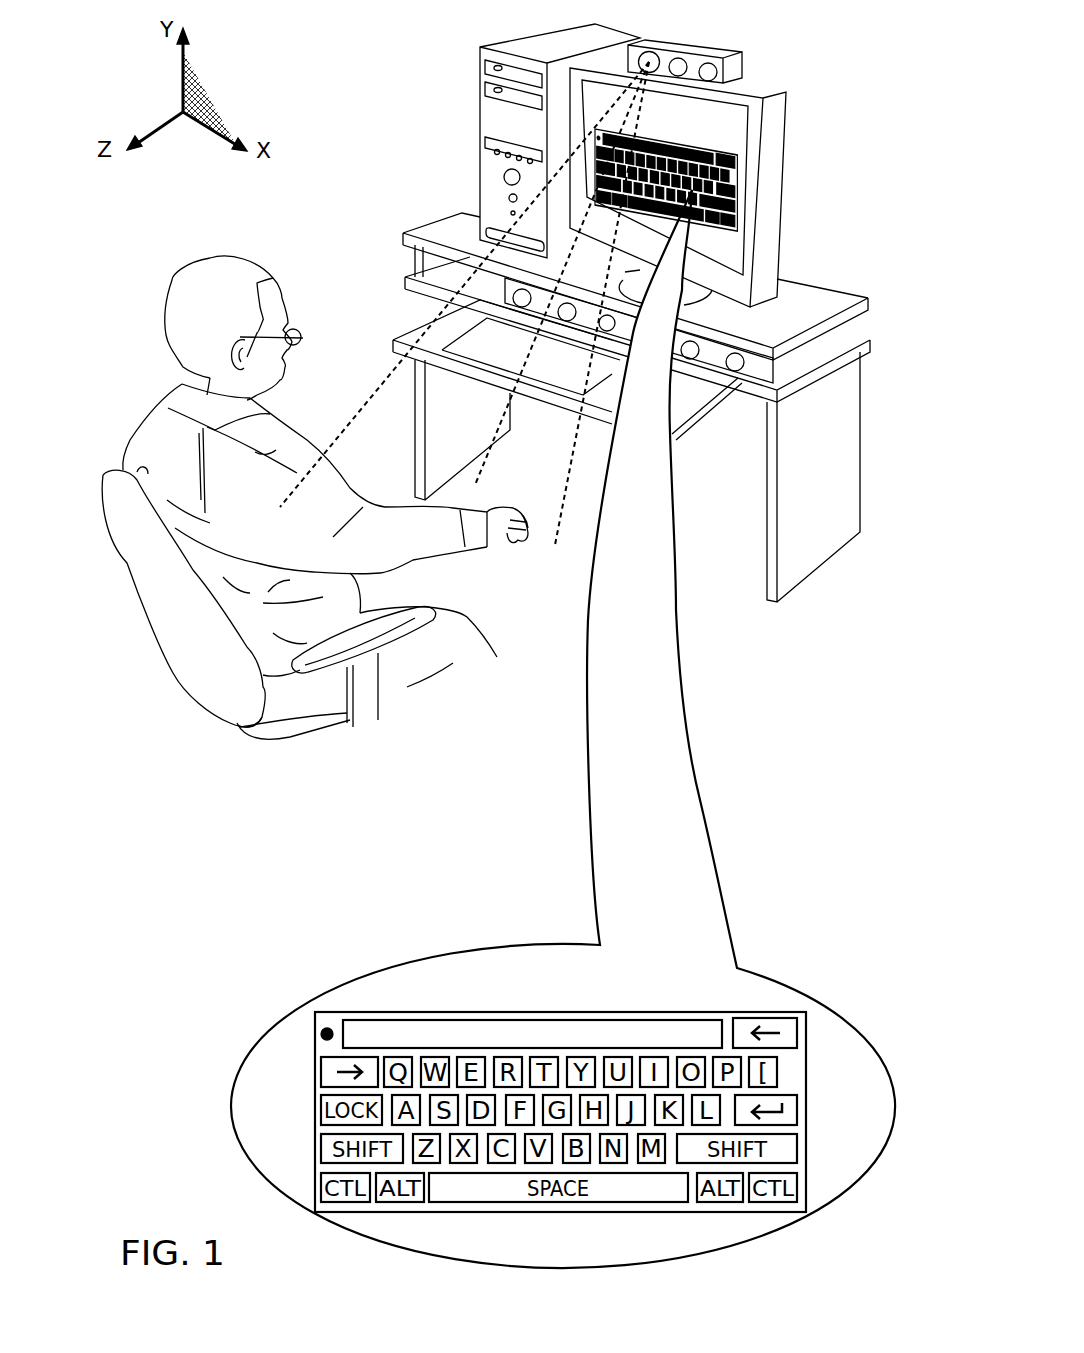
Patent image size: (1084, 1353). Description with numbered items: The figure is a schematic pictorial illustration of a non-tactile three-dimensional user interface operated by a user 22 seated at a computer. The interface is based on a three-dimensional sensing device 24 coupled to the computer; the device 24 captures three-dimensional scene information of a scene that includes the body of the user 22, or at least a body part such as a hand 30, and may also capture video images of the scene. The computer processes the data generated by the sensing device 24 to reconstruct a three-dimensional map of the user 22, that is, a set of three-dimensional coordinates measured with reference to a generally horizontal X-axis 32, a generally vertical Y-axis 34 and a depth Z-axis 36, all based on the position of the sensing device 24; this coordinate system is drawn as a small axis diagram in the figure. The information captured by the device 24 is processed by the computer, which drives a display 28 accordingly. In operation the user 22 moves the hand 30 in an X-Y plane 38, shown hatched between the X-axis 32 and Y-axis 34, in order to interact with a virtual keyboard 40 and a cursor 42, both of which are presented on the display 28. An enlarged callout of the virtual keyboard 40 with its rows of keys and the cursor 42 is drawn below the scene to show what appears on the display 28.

The user 22 is at (233, 260).
The 3D sensing device 24 is at (745, 64).
The display 28 is at (785, 141).
The hand 30 is at (510, 543).
The X-axis 32 is at (226, 141).
The Y-axis 34 is at (182, 72).
The Z-axis 36 is at (145, 140).
The X-Y plane 38 is at (204, 94).
The virtual keyboard 40 is at (738, 181).
The cursor 42 is at (317, 1035).